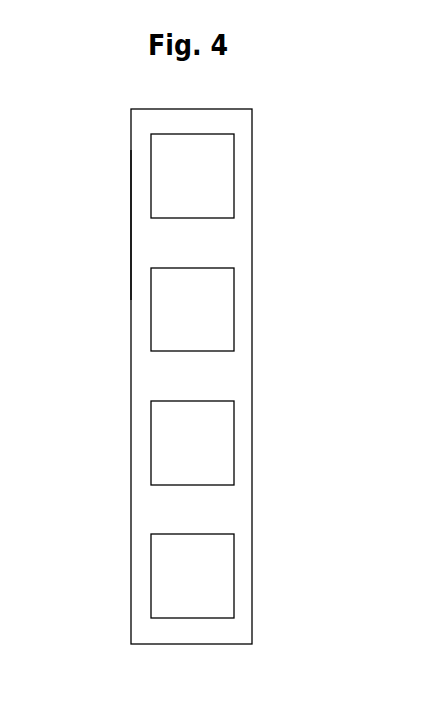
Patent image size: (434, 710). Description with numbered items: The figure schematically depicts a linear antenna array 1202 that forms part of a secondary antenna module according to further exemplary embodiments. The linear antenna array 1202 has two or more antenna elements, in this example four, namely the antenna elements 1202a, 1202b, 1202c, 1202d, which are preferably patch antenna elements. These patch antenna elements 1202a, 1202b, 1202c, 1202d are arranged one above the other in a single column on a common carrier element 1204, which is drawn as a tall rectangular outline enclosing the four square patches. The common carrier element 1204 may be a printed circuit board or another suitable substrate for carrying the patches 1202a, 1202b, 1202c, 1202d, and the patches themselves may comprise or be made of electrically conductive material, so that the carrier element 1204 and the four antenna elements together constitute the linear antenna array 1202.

The linear antenna array 1202 is at (84, 144).
The common carrier element 1204 is at (130, 222).
The antenna element 1202a is at (234, 164).
The antenna element 1202b is at (234, 297).
The antenna element 1202c is at (234, 432).
The antenna element 1202d is at (234, 564).